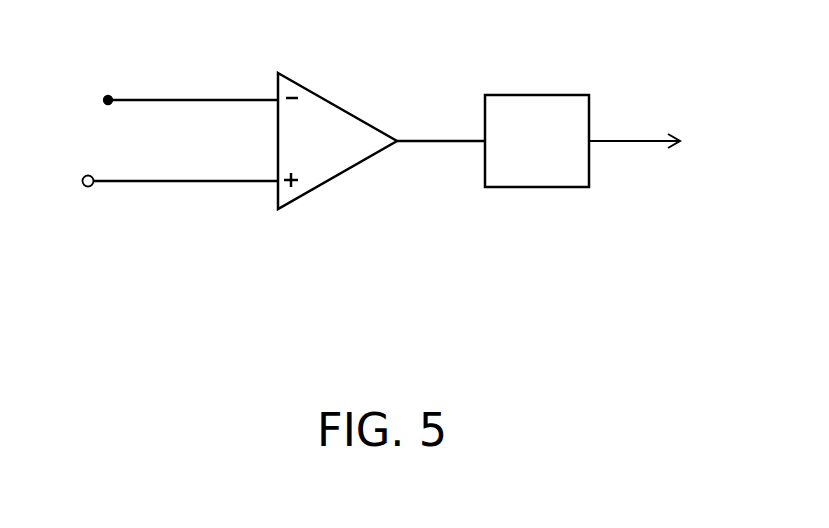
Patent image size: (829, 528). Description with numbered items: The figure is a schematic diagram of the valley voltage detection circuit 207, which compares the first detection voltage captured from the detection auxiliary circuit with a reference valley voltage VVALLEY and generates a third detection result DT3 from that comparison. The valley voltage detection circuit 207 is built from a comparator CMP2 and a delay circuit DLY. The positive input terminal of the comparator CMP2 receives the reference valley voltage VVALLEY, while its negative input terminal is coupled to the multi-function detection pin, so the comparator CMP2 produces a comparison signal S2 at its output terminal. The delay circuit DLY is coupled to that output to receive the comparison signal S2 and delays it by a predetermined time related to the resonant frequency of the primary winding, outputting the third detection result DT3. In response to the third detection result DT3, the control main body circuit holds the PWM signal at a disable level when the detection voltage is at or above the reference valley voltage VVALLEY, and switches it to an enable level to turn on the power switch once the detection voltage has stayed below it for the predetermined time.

The valley voltage detection circuit 207 is at (711, 310).
The comparator CMP2 is at (337, 141).
The delay circuit DLY is at (537, 141).
The comparison signal S2 is at (441, 126).
The third detection result DT3 is at (655, 144).
The reference valley voltage VVALLEY is at (148, 182).